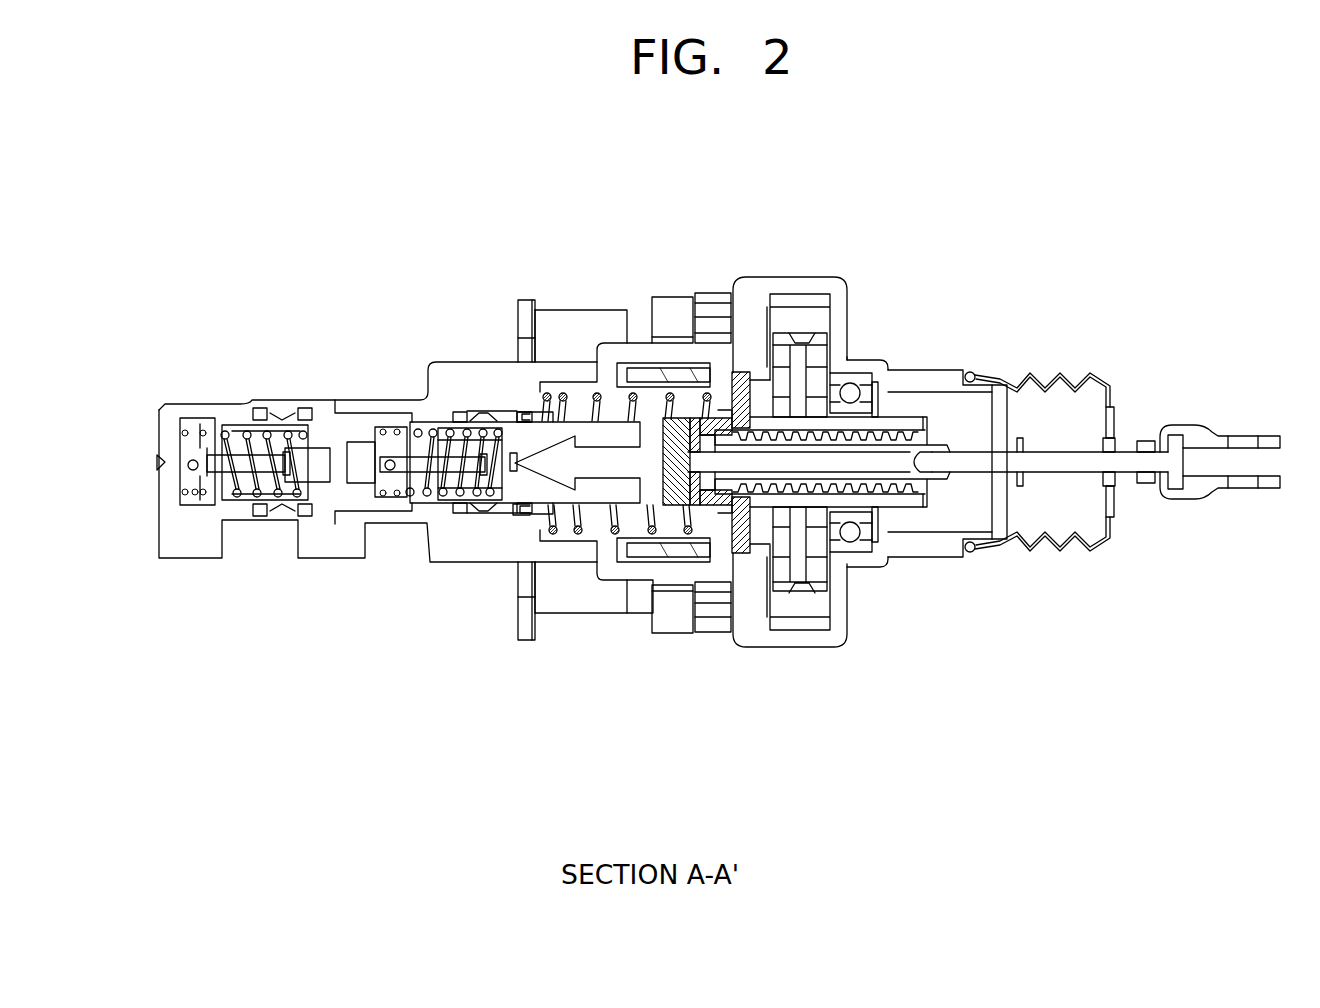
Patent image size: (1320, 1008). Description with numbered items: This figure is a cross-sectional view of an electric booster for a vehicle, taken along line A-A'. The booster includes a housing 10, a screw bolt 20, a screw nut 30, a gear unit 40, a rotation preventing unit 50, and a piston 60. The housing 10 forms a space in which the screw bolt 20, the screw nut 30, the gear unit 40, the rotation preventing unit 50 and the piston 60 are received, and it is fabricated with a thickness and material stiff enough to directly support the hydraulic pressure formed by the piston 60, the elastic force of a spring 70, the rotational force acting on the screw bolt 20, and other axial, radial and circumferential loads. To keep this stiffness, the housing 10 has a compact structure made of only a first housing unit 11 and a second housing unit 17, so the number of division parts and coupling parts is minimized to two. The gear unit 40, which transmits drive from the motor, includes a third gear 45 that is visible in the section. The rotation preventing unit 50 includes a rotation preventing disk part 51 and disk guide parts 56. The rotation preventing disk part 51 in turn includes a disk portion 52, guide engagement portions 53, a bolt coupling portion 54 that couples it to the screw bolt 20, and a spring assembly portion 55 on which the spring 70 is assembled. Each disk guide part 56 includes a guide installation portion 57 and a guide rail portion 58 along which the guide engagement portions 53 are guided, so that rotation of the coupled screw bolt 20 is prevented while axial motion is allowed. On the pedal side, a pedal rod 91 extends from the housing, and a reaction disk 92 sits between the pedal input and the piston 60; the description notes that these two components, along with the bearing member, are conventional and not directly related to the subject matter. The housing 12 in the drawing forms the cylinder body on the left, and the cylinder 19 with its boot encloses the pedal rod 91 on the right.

The housing 10 is at (810, 557).
The first housing unit 11 is at (755, 658).
The master cylinder housing 12 is at (450, 368).
The second housing unit 17 is at (828, 658).
The cylinder / boot 19 is at (938, 383).
The screw bolt 20 is at (857, 440).
The screw nut 30 is at (800, 427).
The gear unit 40 is at (800, 343).
The third gear 45 is at (854, 462).
The rotation preventing unit 50 is at (637, 362).
The rotation preventing disk part 51 is at (636, 775).
The disk portion 52 is at (737, 512).
The guide engagement portion 53 is at (748, 367).
The bolt coupling portion 54 is at (700, 497).
The spring assembly portion 55 is at (718, 505).
The disk guide part 56 is at (681, 352).
The guide installation portion 57 is at (677, 377).
The guide rail portion 58 is at (703, 377).
The piston 60 is at (510, 438).
The spring 70 is at (595, 392).
The pedal rod 91 is at (1077, 467).
The reaction disk 92 is at (673, 458).